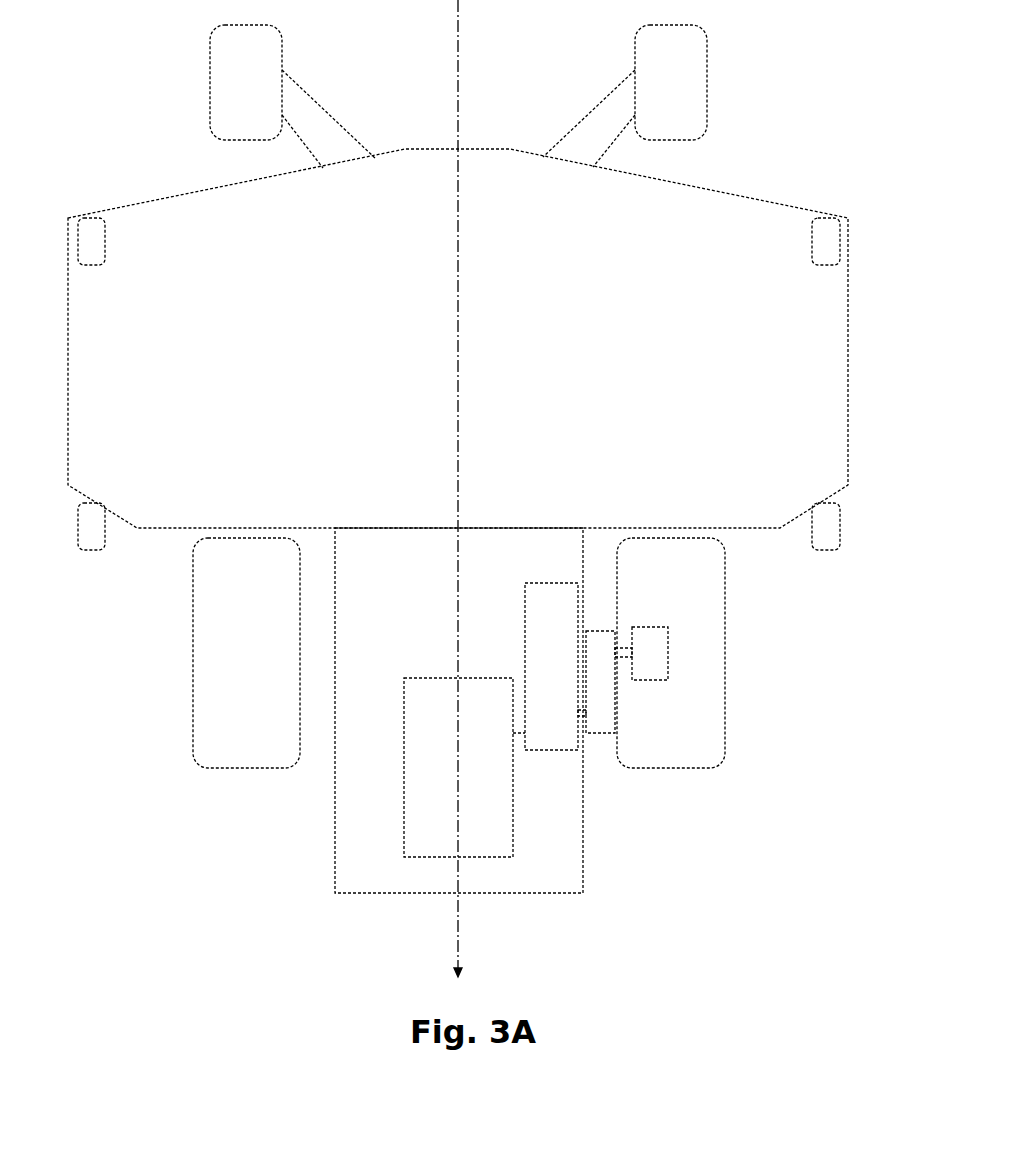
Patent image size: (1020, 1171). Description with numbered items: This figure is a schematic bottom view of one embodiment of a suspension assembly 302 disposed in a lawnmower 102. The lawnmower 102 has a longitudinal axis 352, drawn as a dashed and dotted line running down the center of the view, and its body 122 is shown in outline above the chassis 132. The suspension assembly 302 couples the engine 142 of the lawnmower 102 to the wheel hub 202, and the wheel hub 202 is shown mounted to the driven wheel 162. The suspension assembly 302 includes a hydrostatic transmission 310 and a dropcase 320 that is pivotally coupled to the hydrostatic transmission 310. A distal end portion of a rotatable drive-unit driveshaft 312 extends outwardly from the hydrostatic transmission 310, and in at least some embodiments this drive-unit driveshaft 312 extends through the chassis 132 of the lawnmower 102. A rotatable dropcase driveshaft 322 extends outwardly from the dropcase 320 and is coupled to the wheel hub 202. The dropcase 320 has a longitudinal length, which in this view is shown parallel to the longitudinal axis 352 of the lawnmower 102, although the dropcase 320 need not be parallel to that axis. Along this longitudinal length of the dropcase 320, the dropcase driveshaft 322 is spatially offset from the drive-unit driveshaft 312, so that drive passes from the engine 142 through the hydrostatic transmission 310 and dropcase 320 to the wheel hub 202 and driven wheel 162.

The lawnmower 102 is at (492, 488).
The vehicle body 122 is at (835, 334).
The chassis 132 is at (583, 867).
The engine 142 is at (404, 748).
The driven wheel 162 is at (705, 742).
The wheel hub 202 is at (668, 652).
The suspension assembly 302 is at (565, 720).
The hydrostatic transmission 310 is at (527, 601).
The drive-unit driveshaft 312 is at (583, 737).
The dropcase 320 is at (593, 737).
The dropcase driveshaft 322 is at (623, 645).
The longitudinal axis 352 is at (459, 52).